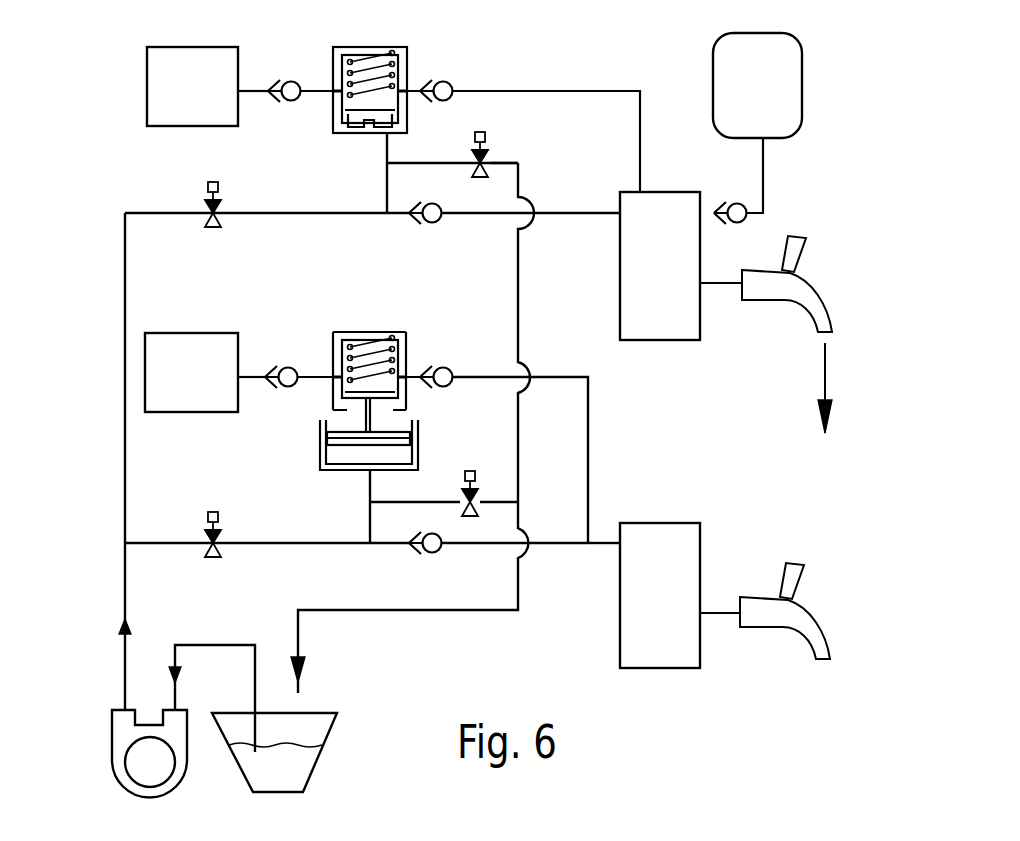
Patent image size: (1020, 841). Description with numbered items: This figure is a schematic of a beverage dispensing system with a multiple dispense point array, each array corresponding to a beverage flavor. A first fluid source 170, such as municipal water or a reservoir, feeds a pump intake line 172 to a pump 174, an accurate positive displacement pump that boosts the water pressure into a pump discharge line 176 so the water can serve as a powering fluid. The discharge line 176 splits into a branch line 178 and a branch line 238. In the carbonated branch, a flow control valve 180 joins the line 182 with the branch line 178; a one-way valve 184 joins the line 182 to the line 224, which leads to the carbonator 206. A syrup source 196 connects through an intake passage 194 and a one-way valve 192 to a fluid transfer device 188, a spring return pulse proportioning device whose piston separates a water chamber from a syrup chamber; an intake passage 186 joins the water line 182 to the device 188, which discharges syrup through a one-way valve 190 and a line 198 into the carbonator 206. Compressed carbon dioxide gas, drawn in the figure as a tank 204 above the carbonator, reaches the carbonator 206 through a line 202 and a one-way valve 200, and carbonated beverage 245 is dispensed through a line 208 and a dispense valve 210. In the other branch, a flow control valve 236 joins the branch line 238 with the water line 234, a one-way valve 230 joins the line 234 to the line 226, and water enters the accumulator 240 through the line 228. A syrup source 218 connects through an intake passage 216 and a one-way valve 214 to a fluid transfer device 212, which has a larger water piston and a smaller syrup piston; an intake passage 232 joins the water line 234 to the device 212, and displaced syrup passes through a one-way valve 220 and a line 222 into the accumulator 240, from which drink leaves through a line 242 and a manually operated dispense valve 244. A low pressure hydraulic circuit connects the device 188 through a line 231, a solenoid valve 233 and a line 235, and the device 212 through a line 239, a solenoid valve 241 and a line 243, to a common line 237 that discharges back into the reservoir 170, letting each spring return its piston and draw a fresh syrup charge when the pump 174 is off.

The first fluid source 170 is at (320, 760).
The pump intake line 172 is at (226, 645).
The pump 174 is at (140, 765).
The pump discharge line 176 is at (122, 672).
The branch line 178 is at (123, 212).
The flow control valve 180 is at (210, 182).
The line 182 is at (318, 212).
The one-way valve 184 is at (440, 222).
The intake passage 186 is at (386, 190).
The fluid transfer device 188 is at (372, 47).
The one-way valve 190 is at (450, 82).
The one-way valve 192 is at (291, 81).
The intake passage 194 is at (252, 93).
The syrup source 196 is at (165, 47).
The line 198 is at (552, 91).
The one-way valve 200 is at (747, 218).
The line 202 is at (763, 187).
The tank 204 is at (763, 33).
The carbonator 206 is at (618, 310).
The line 208 is at (722, 285).
The dispense valve 210 is at (803, 270).
The fluid transfer device 212 is at (377, 332).
The one-way valve 214 is at (293, 367).
The intake passage 216 is at (247, 376).
The syrup source 218 is at (213, 333).
The one-way valve 220 is at (441, 367).
The line 222 is at (590, 417).
The line 224 is at (555, 212).
The line 226 is at (553, 548).
The line 228 is at (603, 540).
The one-way valve 230 is at (432, 553).
The line 231 is at (414, 163).
The intake passage 232 is at (368, 518).
The valve 233 is at (480, 133).
The water line 234 is at (325, 544).
The line 235 is at (503, 162).
The flow control valve 236 is at (213, 557).
The line 237 is at (520, 293).
The branch line 238 is at (170, 542).
The line 239 is at (428, 501).
The accumulator 240 is at (681, 523).
The valve 241 is at (466, 470).
The line 242 is at (712, 614).
The line 243 is at (500, 504).
The dispense valve 244 is at (795, 605).
The carbonated beverage 245 is at (824, 378).